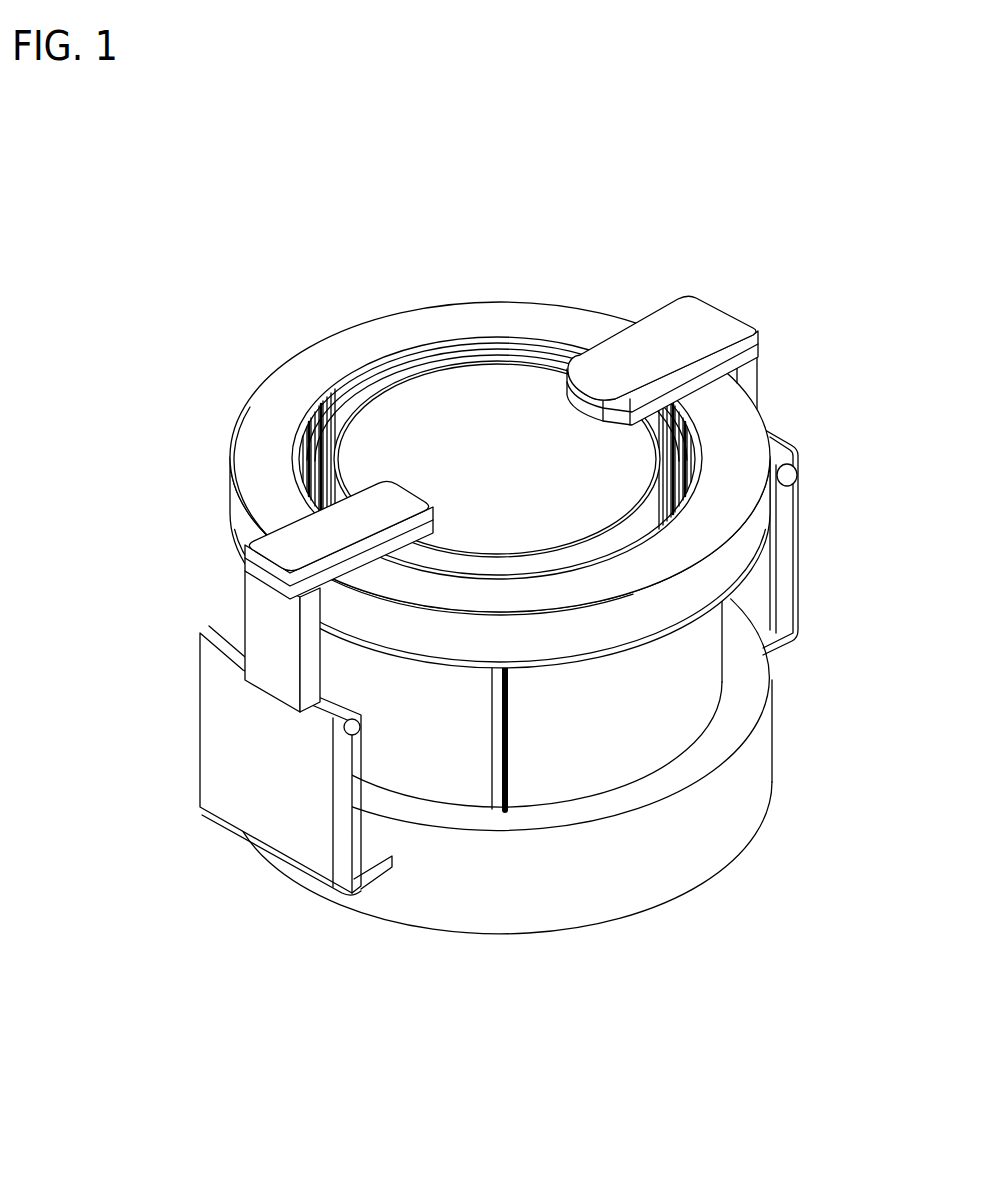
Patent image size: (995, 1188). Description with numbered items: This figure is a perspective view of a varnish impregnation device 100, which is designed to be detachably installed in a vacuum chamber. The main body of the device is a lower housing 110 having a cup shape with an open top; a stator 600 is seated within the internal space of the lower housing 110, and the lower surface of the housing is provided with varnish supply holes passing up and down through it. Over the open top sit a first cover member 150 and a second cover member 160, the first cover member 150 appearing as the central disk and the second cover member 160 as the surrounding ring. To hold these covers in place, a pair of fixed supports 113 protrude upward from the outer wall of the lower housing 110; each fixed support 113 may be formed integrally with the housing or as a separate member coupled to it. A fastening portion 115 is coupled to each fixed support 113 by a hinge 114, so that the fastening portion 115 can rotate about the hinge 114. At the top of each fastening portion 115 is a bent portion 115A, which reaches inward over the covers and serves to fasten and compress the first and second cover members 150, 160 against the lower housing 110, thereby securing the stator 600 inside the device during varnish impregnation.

The varnish impregnation device 100 is at (506, 593).
The lower housing 110 is at (497, 905).
The fixed support 113 is at (790, 532).
The hinge 114 is at (793, 474).
The fastening portion 115 is at (750, 372).
The bent portion 115A is at (655, 340).
The first cover member 150 is at (467, 410).
The second cover member 160 is at (333, 352).
The stator 600 is at (587, 796).